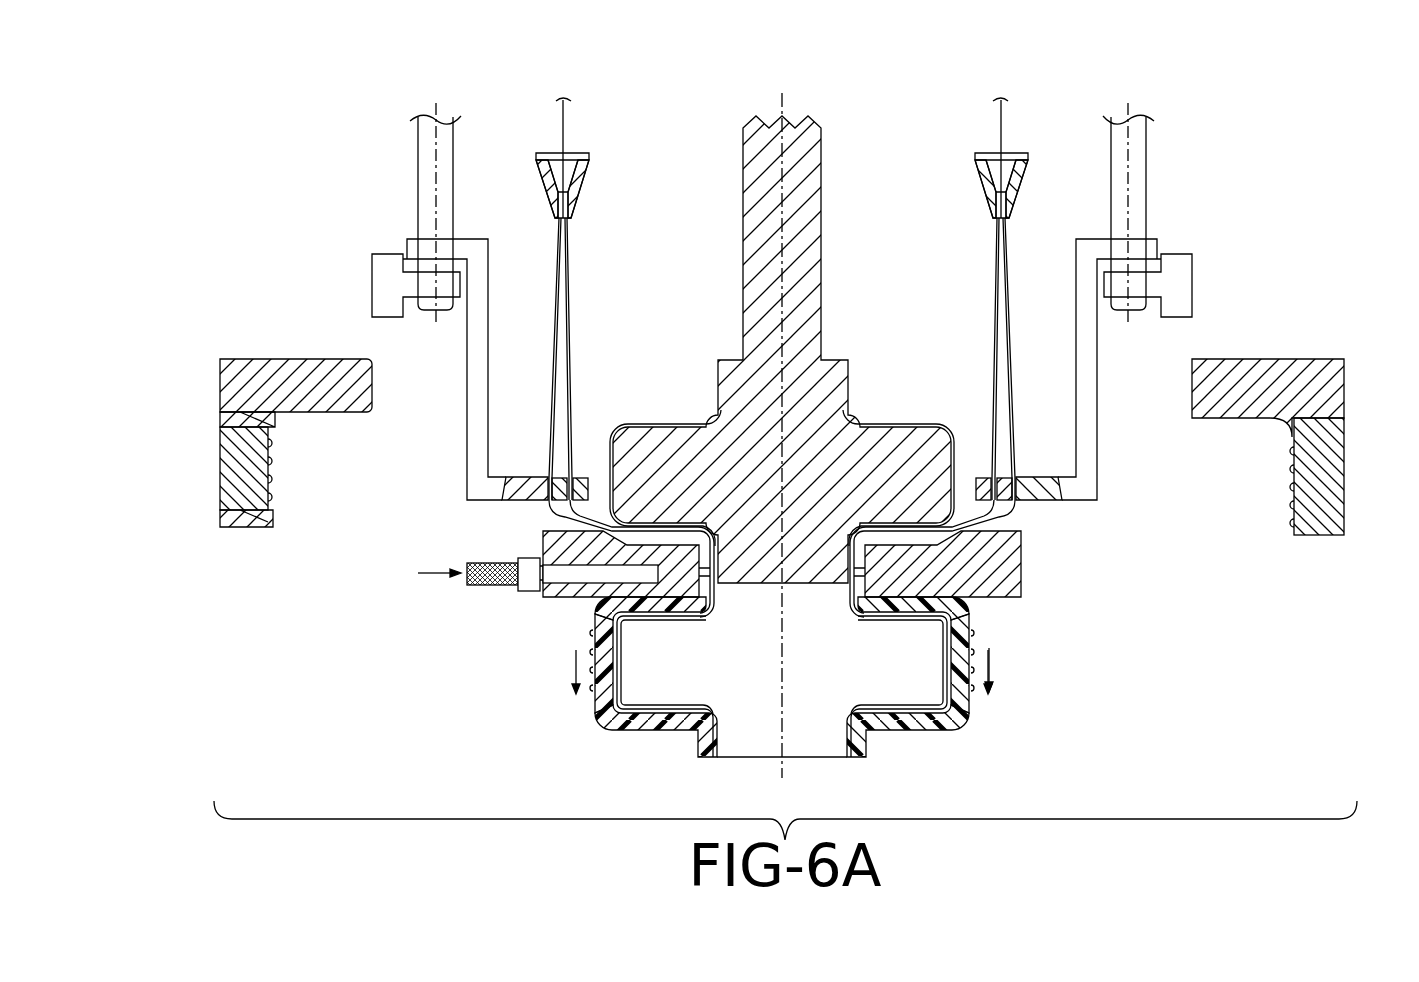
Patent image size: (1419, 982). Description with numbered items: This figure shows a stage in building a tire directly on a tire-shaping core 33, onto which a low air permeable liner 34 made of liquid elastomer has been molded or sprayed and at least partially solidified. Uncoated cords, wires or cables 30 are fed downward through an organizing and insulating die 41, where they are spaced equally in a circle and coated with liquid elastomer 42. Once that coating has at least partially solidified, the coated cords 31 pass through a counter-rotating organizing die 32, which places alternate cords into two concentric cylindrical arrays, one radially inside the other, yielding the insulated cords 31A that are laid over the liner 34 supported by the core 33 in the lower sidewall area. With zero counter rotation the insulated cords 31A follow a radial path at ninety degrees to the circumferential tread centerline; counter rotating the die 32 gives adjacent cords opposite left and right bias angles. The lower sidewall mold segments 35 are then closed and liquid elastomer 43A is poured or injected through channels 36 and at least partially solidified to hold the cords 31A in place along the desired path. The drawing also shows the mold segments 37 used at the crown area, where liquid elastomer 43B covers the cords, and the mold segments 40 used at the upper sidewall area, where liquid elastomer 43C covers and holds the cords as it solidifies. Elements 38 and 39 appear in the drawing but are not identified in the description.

The uncoated cords 30 is at (562, 127).
The coated cords 31 is at (570, 385).
The insulated cords 31A is at (560, 512).
The counter-rotating organizing die 32 is at (560, 480).
The tire-shaping core 33 is at (745, 417).
The low air permeable liner 34 is at (902, 423).
The lower sidewall mold segments 35 is at (985, 588).
The channels 36 is at (588, 575).
The mold segments 37 is at (250, 478).
The base plate 38 is at (232, 520).
The spacer plate 39 is at (235, 420).
The mold segments 40 is at (310, 372).
The organizing and insulating die 41 is at (577, 193).
The liquid elastomer 42 is at (567, 165).
The liquid elastomer 43A is at (672, 727).
The liquid elastomer 43B is at (600, 685).
The liquid elastomer 43C is at (677, 603).